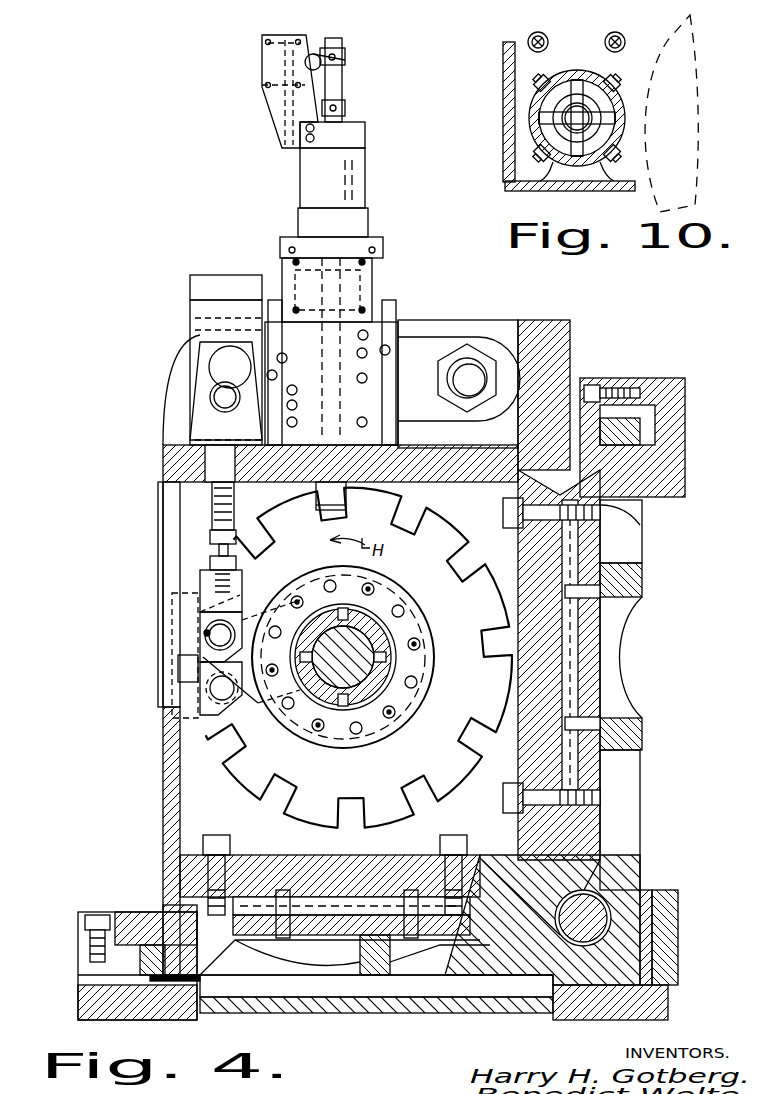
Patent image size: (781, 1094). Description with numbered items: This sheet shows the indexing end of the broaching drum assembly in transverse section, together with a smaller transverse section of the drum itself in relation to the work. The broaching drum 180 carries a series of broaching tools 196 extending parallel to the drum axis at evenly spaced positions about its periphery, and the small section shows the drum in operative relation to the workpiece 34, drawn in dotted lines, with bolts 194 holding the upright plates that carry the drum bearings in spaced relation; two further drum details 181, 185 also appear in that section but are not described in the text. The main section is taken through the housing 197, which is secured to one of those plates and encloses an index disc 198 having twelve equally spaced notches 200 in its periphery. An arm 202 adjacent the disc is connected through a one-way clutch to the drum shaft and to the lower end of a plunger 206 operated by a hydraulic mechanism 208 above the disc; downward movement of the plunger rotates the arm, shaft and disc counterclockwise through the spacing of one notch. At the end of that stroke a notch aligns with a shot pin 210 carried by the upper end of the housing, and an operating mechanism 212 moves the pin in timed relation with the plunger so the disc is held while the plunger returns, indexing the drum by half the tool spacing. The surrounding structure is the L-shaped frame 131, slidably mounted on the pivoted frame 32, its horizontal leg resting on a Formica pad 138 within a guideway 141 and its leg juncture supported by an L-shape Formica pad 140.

In FIG. 4, the pivoted frame 32 is at (688, 1007).
In FIG. 10, the workpiece 34 is at (697, 62).
In FIG. 4, the L-shaped frame 131 is at (670, 812).
In FIG. 10, the L-shaped frame 131 is at (510, 196).
In FIG. 4, the Formica pad 138 is at (130, 1030).
In FIG. 4, the L-shape Formica pad 140 is at (600, 985).
In FIG. 4, the guideway 141 is at (80, 962).
In FIG. 10, the broaching drum 180 is at (578, 72).
In FIG. 10, the bore 181 is at (585, 125).
In FIG. 10, the cross slots 185 is at (590, 110).
In FIG. 4, the bolts 194 is at (470, 365).
In FIG. 10, the bolts 194 is at (620, 33).
In FIG. 10, the broaching tools 196 is at (562, 190).
In FIG. 4, the housing 197 is at (560, 335).
In FIG. 4, the index disc 198 is at (420, 540).
In FIG. 4, the notches 200 is at (455, 742).
In FIG. 4, the arm 202 is at (255, 600).
In FIG. 4, the plunger 206 is at (210, 525).
In FIG. 4, the hydraulic mechanism 208 is at (200, 320).
In FIG. 4, the shot pin 210 is at (335, 500).
In FIG. 4, the operating mechanism 212 is at (372, 276).